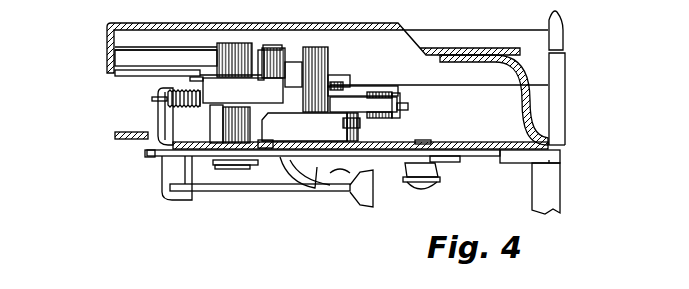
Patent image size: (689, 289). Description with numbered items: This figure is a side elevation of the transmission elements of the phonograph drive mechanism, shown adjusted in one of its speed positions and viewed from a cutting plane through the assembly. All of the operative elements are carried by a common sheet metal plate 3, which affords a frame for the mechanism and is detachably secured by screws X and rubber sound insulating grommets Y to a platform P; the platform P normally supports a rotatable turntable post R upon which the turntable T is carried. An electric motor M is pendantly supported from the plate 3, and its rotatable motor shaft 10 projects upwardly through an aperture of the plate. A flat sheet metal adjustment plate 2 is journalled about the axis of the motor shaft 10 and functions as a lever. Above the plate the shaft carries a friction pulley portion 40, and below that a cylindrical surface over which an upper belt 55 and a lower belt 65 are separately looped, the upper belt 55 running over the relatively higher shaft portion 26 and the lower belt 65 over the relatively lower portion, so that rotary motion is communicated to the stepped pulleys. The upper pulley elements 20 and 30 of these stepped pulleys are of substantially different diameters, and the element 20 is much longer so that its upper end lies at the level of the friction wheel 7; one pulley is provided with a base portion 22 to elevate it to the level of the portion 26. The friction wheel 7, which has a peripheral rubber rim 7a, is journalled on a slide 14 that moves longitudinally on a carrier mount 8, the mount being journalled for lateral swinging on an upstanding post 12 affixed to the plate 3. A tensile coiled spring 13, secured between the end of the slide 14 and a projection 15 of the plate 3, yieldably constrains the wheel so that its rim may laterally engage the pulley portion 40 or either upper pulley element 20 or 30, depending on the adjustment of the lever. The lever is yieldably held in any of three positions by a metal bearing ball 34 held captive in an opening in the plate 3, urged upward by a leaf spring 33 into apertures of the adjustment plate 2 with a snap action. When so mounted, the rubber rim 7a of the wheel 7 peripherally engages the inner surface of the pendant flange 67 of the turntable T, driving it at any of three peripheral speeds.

The pendant peripheral flange 67 is at (110, 44).
The peripheral rubber rim 7a is at (118, 58).
The upper belt 55 is at (220, 88).
The upper pulley element 30 is at (217, 60).
The higher shaft portion 26 is at (266, 76).
The motor shaft 10 is at (272, 46).
The friction pulley portion 40 is at (288, 62).
The upper pulley element 20 is at (318, 64).
The lower belt 65 is at (312, 130).
The slide 14 is at (373, 92).
The carrier mount 8 is at (400, 112).
The friction wheel 7 is at (133, 74).
The tensile coiled spring 13 is at (155, 100).
The projection 15 is at (163, 113).
The base portion 22 is at (220, 125).
The sheet metal plate 3 is at (157, 154).
The metal bearing ball 34 is at (230, 166).
The leaf spring 33 is at (240, 169).
The upstanding post 12 is at (265, 148).
The adjustment plate 2 is at (326, 187).
The phonograph turntable T is at (345, 26).
The platform P is at (490, 142).
The turntable post R is at (566, 108).
The rubber sound insulating grommets Y is at (436, 158).
The screws X is at (421, 188).
The electric motor M is at (293, 205).